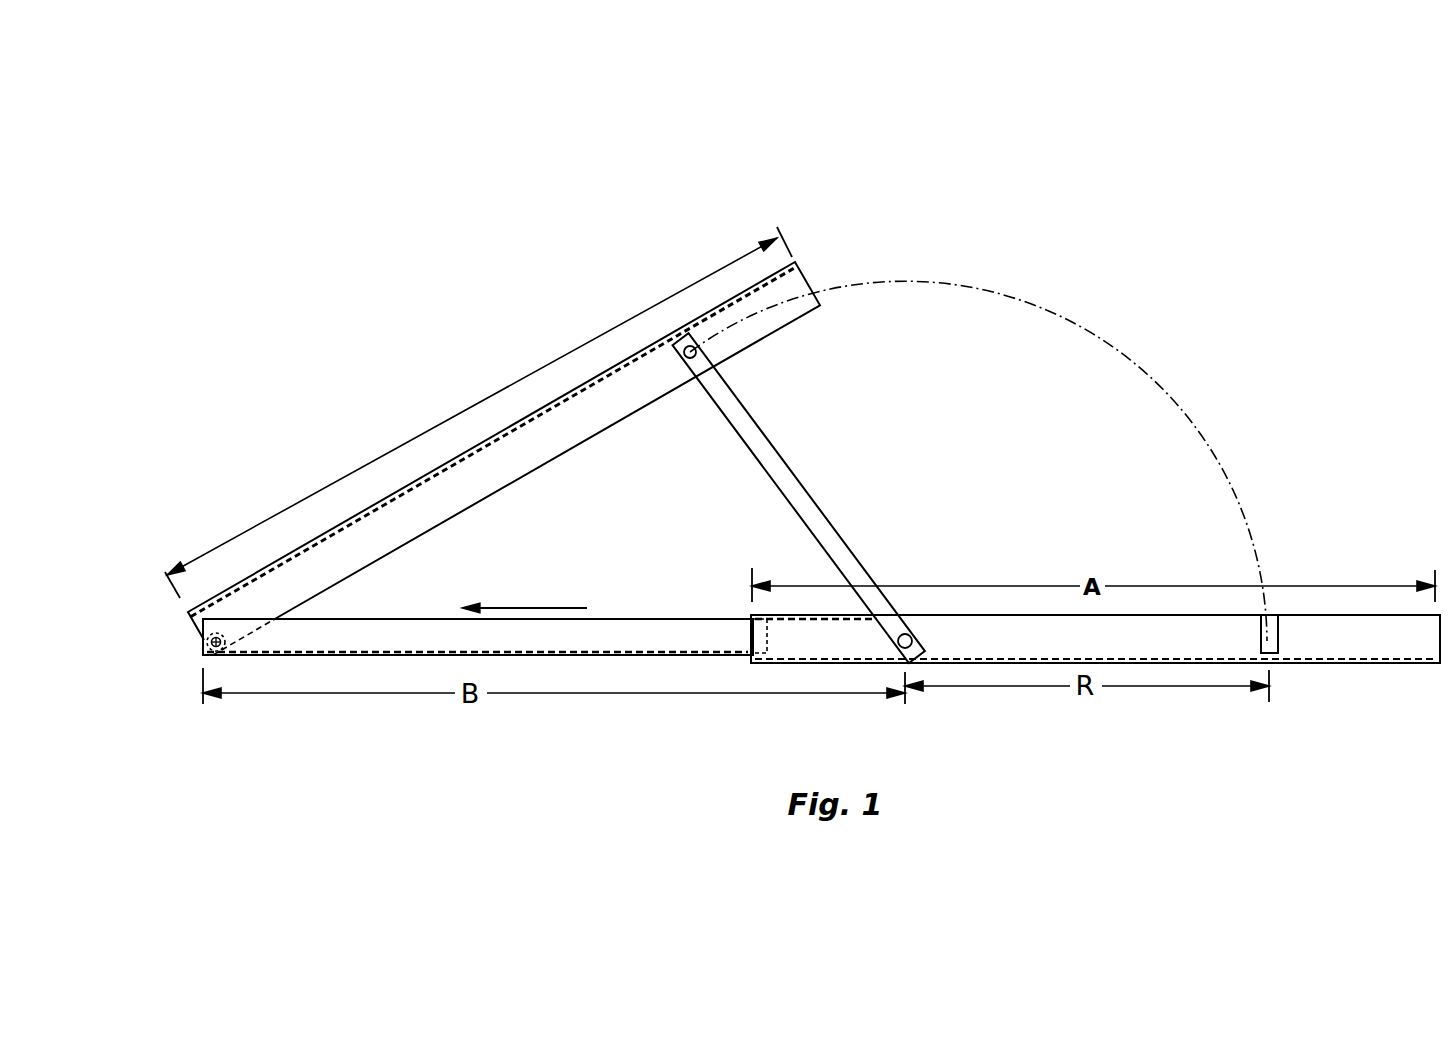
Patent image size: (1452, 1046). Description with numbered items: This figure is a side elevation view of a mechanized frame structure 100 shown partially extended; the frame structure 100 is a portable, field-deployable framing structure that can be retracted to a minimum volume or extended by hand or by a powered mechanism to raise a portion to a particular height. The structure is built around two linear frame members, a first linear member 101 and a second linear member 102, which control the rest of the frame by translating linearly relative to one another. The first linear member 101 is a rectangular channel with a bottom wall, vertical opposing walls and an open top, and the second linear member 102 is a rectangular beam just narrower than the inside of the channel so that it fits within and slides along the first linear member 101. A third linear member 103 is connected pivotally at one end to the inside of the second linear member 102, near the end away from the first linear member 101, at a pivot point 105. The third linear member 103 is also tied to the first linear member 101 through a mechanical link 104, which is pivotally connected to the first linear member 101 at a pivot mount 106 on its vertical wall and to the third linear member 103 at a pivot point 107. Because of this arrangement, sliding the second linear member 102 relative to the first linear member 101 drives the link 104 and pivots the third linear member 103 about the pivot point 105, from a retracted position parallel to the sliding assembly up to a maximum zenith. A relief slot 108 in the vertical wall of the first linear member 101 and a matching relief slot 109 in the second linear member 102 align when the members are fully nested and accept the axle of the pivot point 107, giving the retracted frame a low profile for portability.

The mechanized frame structure 100 is at (1108, 253).
The linear member 101 is at (1302, 665).
The linear member 102 is at (662, 617).
The linear member 103 is at (467, 510).
The mechanical link 104 is at (812, 493).
The pivot point 105 is at (202, 638).
The pivot mount 106 is at (917, 645).
The pivot point 107 is at (700, 352).
The relief slot 108 is at (1278, 641).
The relief slot 109 is at (767, 638).